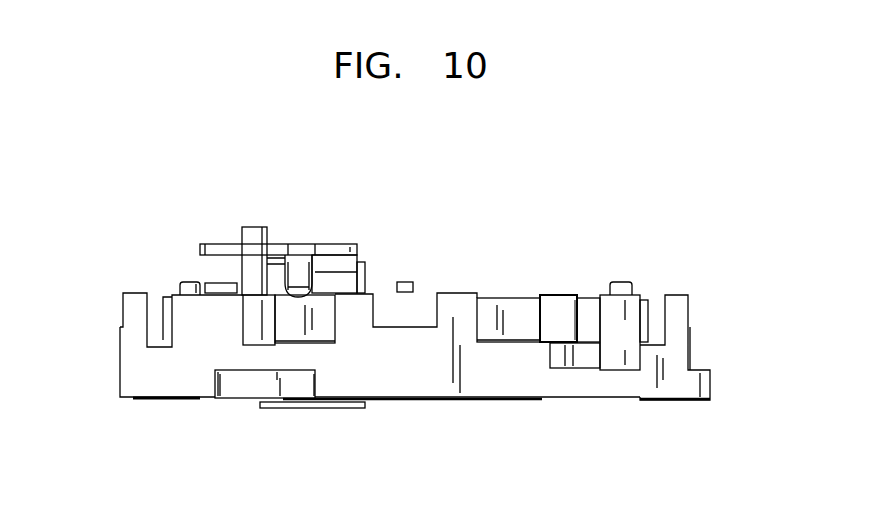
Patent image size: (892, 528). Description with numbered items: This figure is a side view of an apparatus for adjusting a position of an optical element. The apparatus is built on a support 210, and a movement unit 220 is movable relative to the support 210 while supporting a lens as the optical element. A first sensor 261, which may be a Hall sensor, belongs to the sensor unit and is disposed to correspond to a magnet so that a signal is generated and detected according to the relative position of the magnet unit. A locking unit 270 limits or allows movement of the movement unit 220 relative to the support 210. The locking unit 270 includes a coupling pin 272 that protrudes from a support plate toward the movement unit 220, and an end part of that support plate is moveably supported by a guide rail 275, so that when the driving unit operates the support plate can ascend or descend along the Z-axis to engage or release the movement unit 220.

The support 210 is at (422, 388).
The movement unit 220 is at (517, 313).
The first sensor 261 is at (407, 282).
The locking unit 270 is at (317, 236).
The coupling pin 272 is at (302, 253).
The guide rail 275 is at (253, 228).